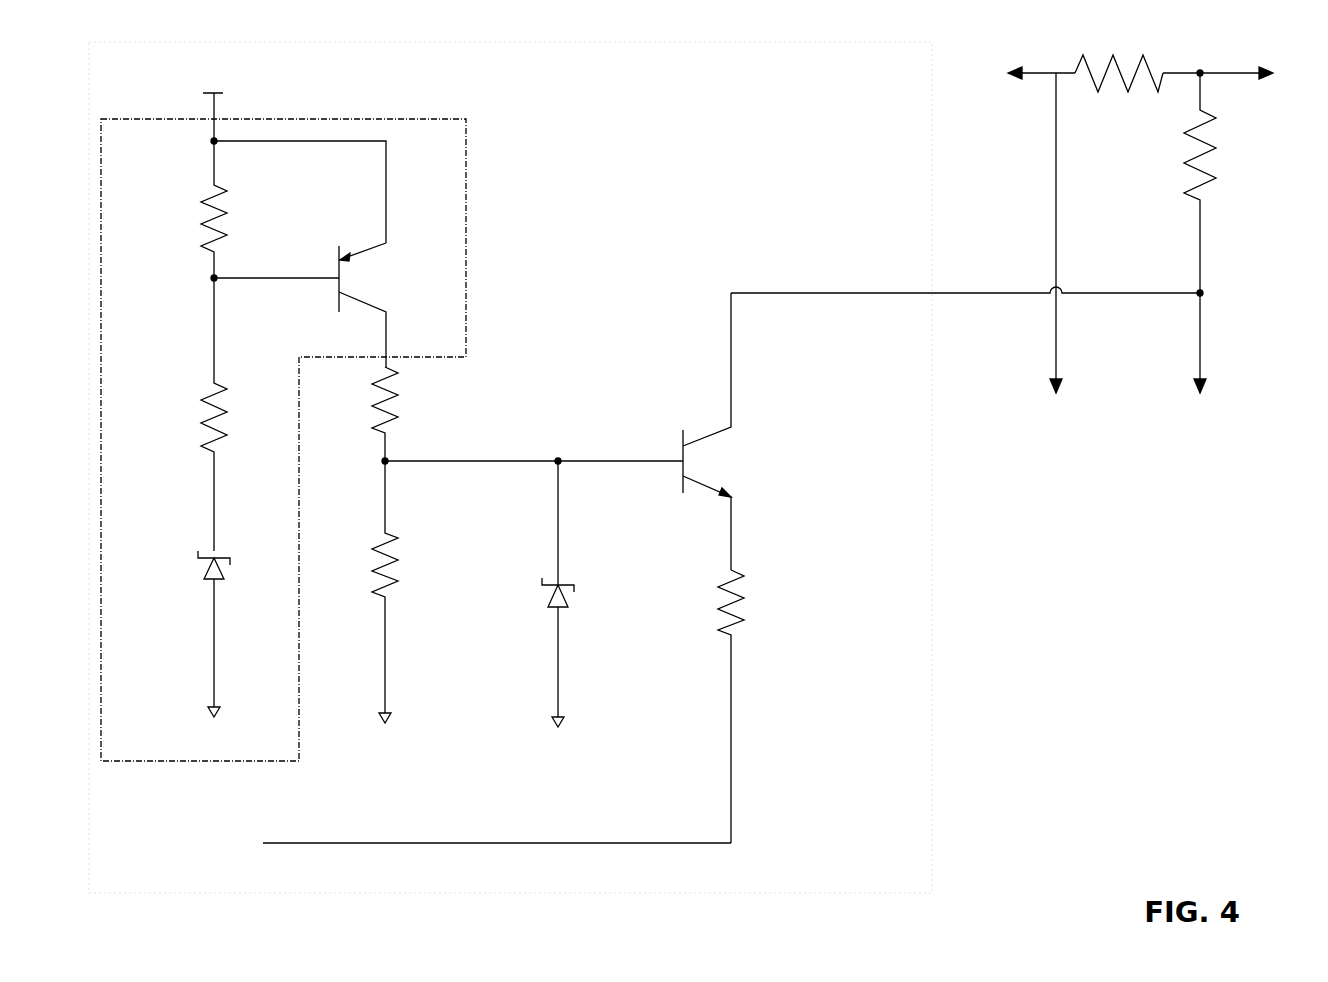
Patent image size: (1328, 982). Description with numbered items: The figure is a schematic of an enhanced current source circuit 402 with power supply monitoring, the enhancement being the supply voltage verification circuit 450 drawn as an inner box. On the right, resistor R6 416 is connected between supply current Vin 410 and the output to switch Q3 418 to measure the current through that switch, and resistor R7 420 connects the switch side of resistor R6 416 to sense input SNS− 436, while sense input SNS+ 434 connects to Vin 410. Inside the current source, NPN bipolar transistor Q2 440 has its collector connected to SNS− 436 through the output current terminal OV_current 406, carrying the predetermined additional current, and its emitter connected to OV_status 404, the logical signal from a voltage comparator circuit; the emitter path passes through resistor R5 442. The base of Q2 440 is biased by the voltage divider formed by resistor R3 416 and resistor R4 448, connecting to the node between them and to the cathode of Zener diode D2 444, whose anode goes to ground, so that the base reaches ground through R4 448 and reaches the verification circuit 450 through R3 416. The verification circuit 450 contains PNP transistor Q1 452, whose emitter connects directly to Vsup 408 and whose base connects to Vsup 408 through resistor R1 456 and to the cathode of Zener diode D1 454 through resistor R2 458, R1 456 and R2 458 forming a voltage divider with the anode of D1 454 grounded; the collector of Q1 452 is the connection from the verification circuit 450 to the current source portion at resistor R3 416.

The current source circuit 402 is at (510, 467).
The OV_status 404 is at (497, 842).
The OV_current 406 is at (965, 291).
The Vsup 408 is at (181, 97).
The supply current Vin 410 is at (1017, 72).
The resistor R6 416 is at (767, 233).
The switch Q3 418 is at (1239, 72).
The resistor R7 420 is at (1225, 183).
The sense input SNS+ 434 is at (1051, 266).
The sense input SNS− 436 is at (1201, 376).
The NPN bipolar transistor Q2 440 is at (730, 431).
The resistor R5 442 is at (751, 706).
The Zener diode D2 444 is at (578, 594).
The resistor R4 448 is at (408, 592).
The supply voltage verification circuit 450 is at (466, 194).
The PNP BJT transistor Q1 452 is at (385, 305).
The Zener diode D1 454 is at (233, 633).
The resistor R1 456 is at (234, 209).
The resistor R2 458 is at (234, 414).